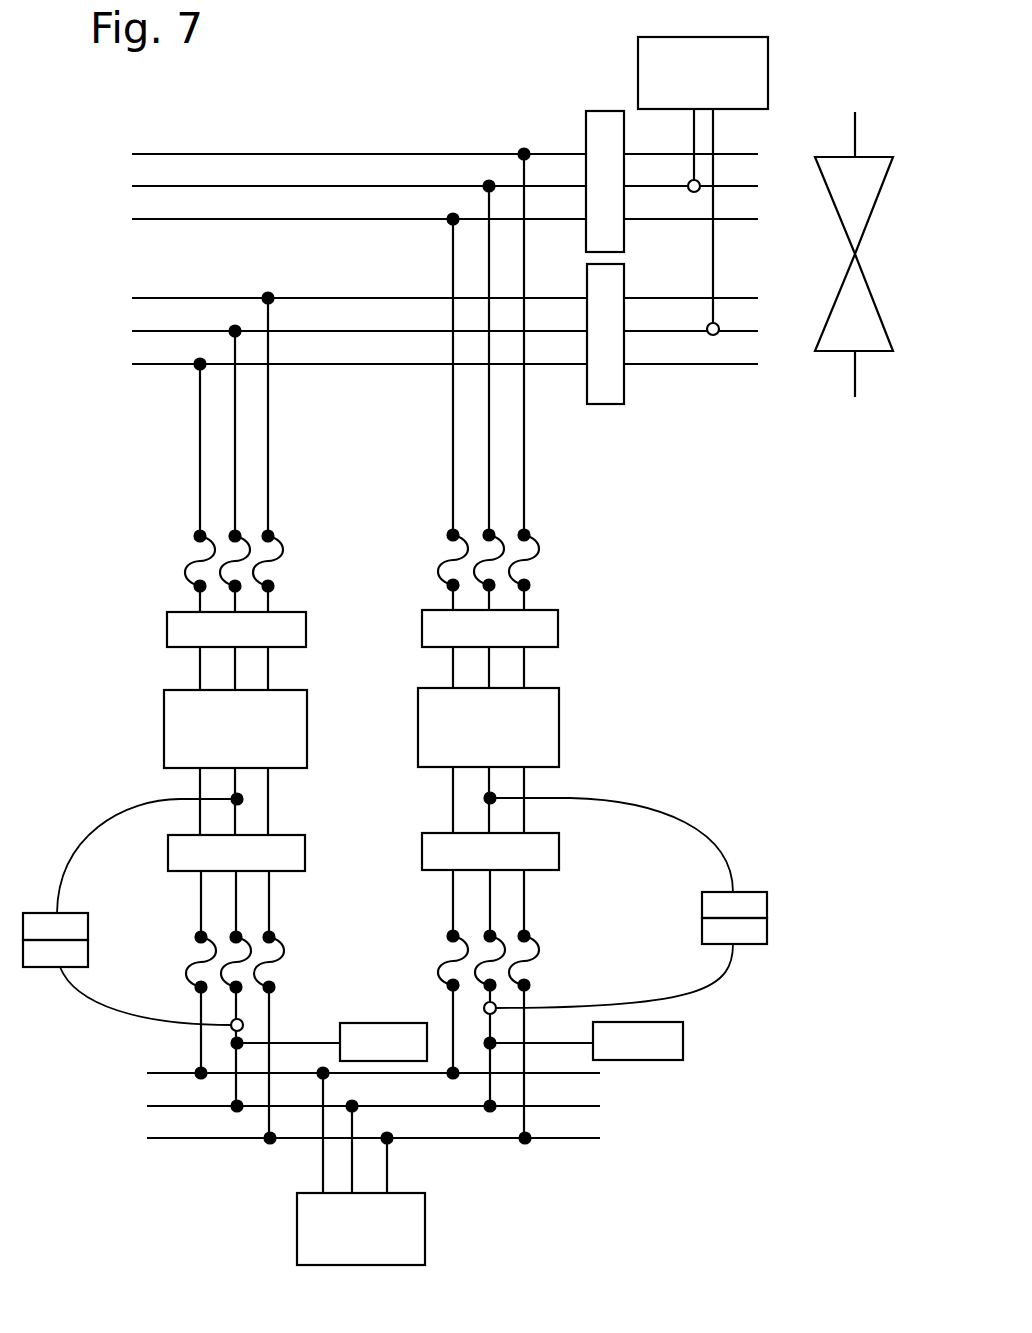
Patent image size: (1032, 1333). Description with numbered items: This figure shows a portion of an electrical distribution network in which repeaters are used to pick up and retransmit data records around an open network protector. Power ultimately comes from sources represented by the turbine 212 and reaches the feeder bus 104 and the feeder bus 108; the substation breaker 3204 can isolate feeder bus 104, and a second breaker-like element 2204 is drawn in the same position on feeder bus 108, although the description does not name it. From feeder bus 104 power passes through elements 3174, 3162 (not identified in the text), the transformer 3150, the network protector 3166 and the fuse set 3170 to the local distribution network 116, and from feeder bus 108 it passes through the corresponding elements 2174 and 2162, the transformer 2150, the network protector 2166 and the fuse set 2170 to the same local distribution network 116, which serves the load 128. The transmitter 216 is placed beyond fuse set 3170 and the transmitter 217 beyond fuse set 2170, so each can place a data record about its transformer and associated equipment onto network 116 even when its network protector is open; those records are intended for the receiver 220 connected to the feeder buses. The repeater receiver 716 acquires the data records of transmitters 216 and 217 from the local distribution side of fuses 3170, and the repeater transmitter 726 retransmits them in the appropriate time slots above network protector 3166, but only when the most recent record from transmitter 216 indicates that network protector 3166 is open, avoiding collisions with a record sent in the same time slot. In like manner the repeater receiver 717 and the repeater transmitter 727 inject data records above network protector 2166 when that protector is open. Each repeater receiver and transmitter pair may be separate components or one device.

The feeder bus 104 is at (123, 155).
The feeder bus 108 is at (123, 298).
The local distribution network 116 is at (137, 1073).
The load 128 is at (361, 1169).
The turbine 212 is at (815, 398).
The transmitter 216 is at (584, 1041).
The transmitter 217 is at (330, 1042).
The receiver 220 is at (703, 186).
The repeater receiver 716 is at (625, 966).
The repeater receiver 717 is at (133, 985).
The repeater transmitter 726 is at (626, 856).
The repeater transmitter 727 is at (133, 868).
The transformer 2150 is at (235, 729).
The filter 2162 is at (236, 629).
The network protector 2166 is at (236, 853).
The fuse set 2170 is at (287, 928).
The switches 2174 is at (160, 531).
The sensor 2204 is at (601, 396).
The transformer 3150 is at (488, 727).
The filter 3162 is at (490, 628).
The network protector 3166 is at (490, 851).
The fuse set 3170 is at (535, 928).
The switches 3174 is at (572, 528).
The substation breaker 3204 is at (598, 120).